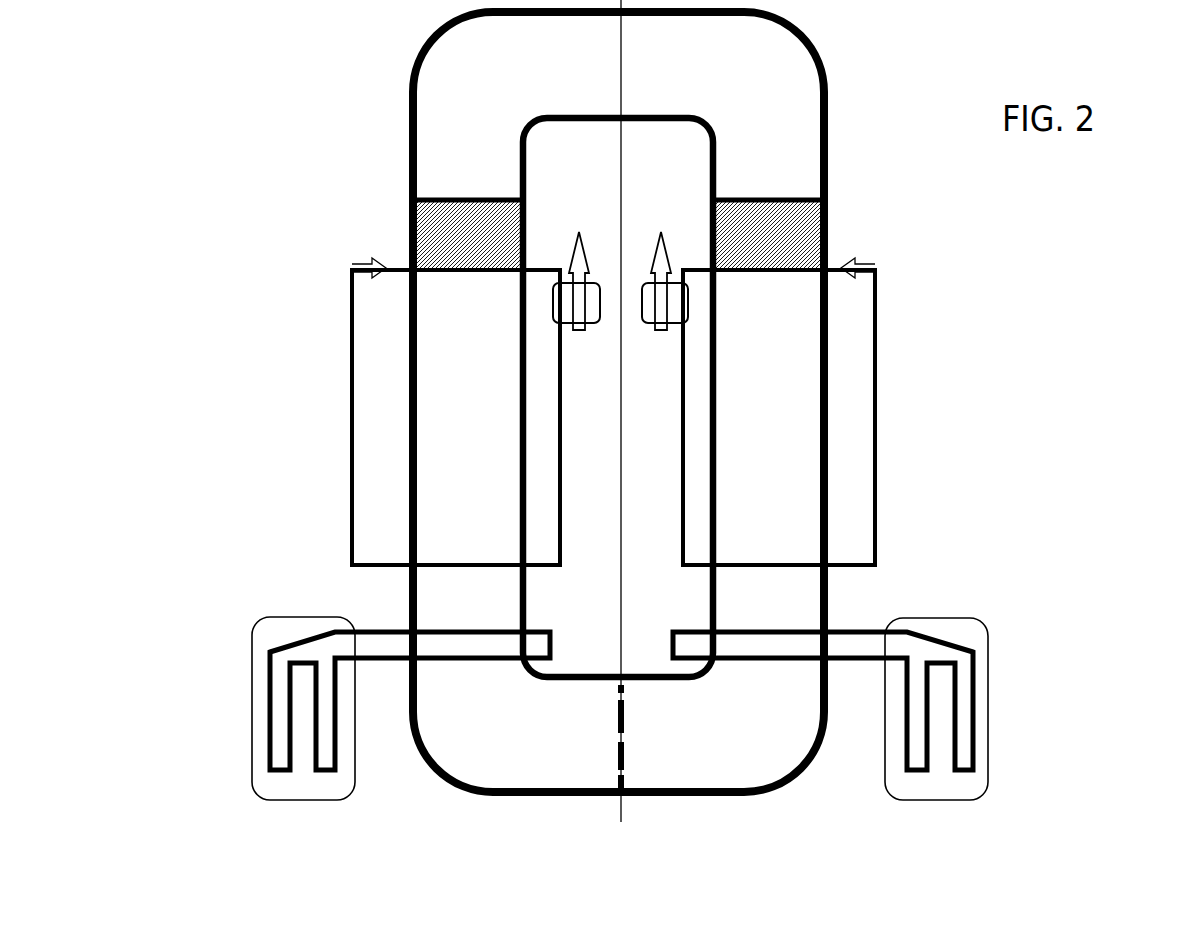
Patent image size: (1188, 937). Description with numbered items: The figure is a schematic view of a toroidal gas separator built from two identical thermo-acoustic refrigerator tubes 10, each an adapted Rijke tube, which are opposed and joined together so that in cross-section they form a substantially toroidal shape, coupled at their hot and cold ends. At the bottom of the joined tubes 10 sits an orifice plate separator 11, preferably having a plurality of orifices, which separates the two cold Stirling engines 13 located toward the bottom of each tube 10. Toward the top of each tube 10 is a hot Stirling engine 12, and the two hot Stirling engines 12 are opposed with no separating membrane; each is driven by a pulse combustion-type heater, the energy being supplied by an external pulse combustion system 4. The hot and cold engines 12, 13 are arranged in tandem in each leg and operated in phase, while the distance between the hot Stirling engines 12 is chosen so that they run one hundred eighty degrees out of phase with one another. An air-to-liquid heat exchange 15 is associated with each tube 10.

The pulse combustion system 4 is at (967, 697).
The tube 10 is at (455, 423).
The orifice plate separator 11 is at (628, 792).
The hot Stirling engine 12 is at (805, 237).
The cold Stirling engine 13 is at (797, 598).
The air-to-liquid heat exchange 15 is at (673, 303).